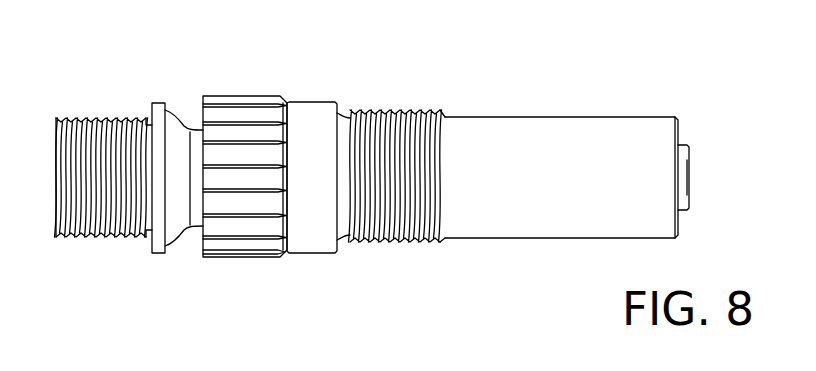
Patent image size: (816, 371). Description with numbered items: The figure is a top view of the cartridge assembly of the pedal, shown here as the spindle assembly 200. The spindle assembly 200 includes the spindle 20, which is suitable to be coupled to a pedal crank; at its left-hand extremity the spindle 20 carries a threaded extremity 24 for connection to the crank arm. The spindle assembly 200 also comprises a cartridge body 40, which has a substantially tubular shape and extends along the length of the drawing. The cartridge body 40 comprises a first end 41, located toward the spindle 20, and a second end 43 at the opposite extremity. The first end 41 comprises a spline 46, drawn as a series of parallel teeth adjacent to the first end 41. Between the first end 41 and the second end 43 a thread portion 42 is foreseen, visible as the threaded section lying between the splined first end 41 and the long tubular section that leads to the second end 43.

The spindle 20 is at (178, 150).
The threaded extremity 24 is at (104, 207).
The cartridge body 40 is at (507, 198).
The first end 41 is at (315, 130).
The thread portion 42 is at (398, 242).
The second end 43 is at (667, 133).
The spline 46 is at (245, 203).
The spindle assembly 200 is at (690, 131).